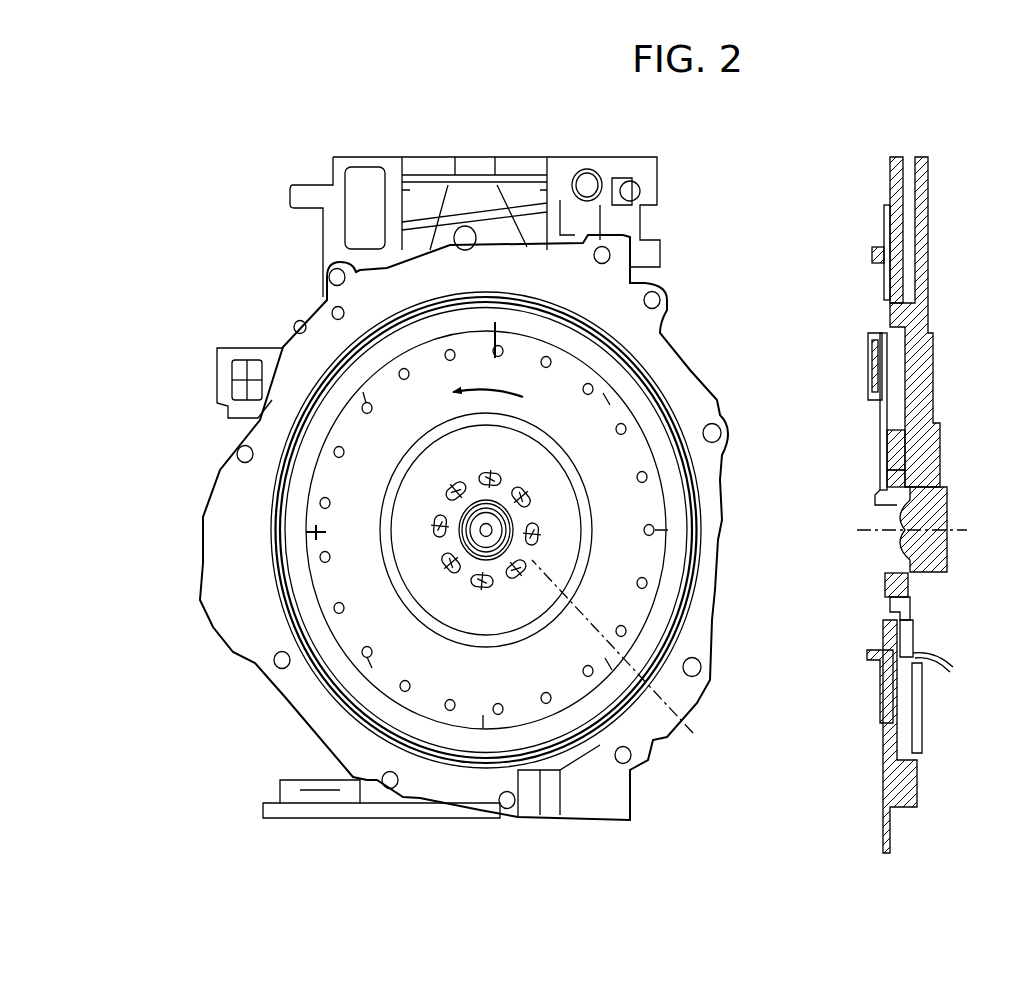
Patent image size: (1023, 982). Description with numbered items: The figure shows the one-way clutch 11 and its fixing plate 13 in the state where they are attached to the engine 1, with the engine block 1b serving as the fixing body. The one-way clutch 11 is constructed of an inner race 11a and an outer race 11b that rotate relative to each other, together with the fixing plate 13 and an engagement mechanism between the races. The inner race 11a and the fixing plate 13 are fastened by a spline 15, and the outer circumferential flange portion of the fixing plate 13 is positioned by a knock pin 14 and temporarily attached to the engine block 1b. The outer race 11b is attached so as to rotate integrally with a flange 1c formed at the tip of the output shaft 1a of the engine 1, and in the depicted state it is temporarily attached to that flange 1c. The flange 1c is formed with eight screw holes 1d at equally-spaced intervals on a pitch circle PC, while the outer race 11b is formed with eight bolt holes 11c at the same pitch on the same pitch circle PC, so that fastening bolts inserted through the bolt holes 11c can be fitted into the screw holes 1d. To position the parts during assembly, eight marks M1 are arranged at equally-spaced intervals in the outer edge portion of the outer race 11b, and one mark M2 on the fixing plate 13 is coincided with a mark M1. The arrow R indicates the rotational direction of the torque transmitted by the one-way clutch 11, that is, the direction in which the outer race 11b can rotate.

The engine 1 is at (290, 187).
The output shaft 1a is at (942, 553).
The engine block 1b is at (568, 172).
The flange 1c is at (908, 596).
The screw holes 1d is at (455, 575).
The one-way clutch 11 is at (672, 567).
The inner race 11a is at (872, 385).
The outer race 11b is at (880, 450).
The bolt holes 11c is at (448, 565).
The fixing plate 13 is at (657, 347).
The knock pin 14 is at (333, 258).
The spline 15 is at (870, 652).
The marks M1 is at (485, 348).
The mark M2 is at (487, 333).
The arrow R is at (488, 381).
The pitch circle PC is at (629, 653).